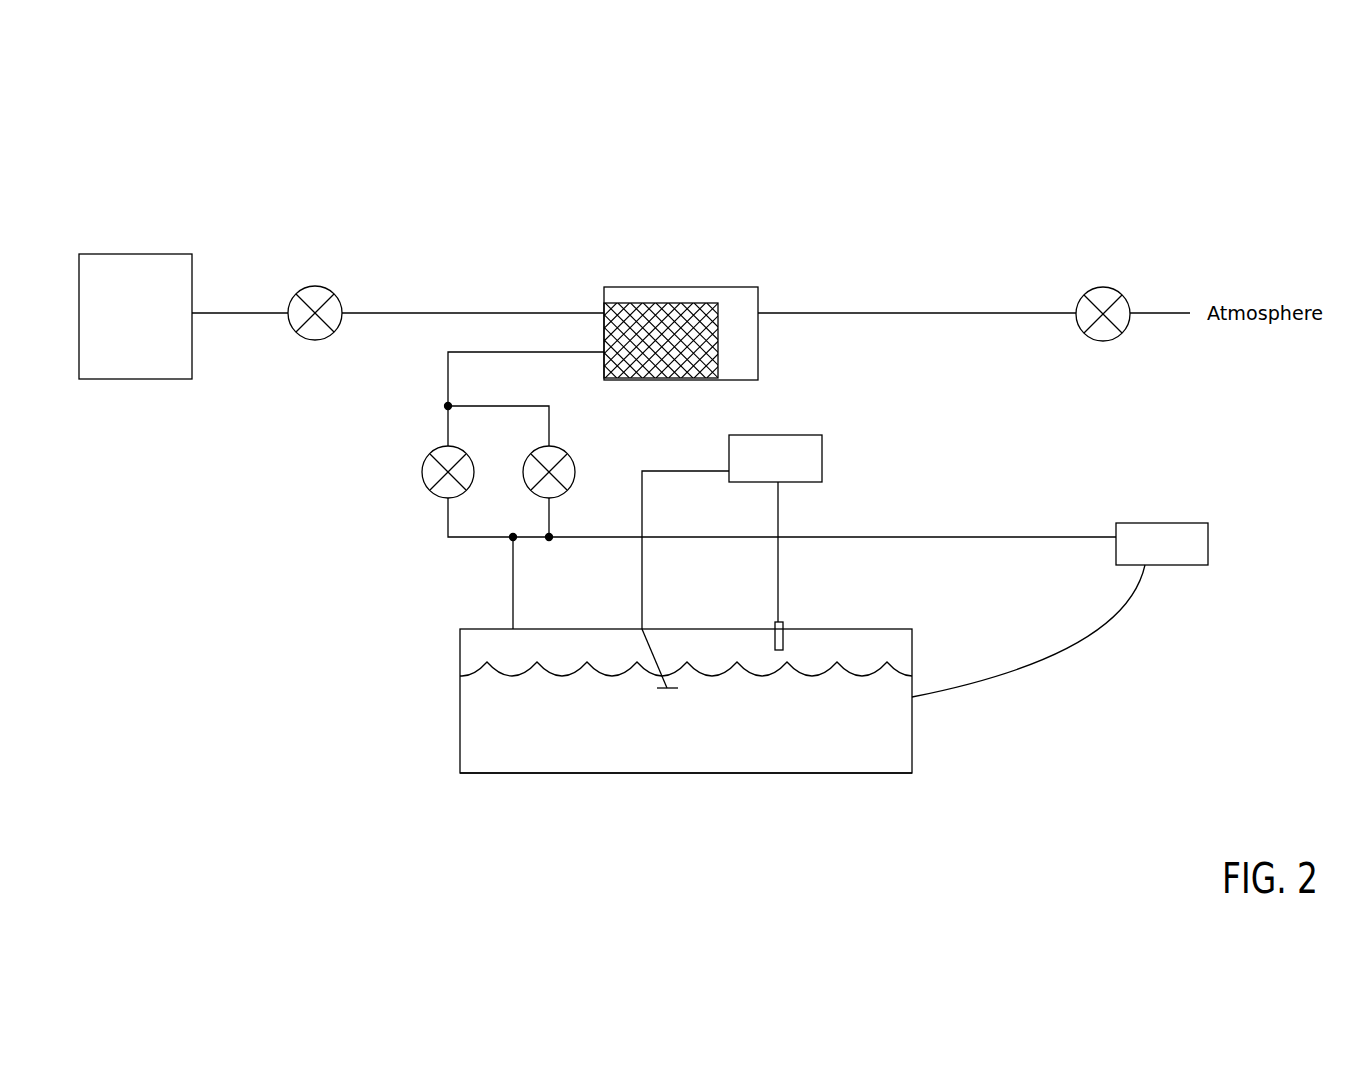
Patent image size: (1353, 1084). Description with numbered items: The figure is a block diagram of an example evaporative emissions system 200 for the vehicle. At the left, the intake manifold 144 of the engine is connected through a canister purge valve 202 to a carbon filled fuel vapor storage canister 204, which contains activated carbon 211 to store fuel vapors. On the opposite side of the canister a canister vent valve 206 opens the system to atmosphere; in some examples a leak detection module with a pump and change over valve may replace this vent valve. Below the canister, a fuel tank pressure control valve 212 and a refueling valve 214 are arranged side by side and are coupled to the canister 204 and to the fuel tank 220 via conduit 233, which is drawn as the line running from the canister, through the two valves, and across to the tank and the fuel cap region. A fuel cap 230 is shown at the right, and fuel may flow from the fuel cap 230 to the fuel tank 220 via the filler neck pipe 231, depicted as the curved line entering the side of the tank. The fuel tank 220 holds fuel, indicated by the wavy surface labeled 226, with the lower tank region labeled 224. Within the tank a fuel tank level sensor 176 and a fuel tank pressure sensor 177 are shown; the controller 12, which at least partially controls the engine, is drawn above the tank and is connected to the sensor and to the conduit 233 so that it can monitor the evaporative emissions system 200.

The evaporative emissions system 200 is at (162, 140).
The intake manifold 144 is at (152, 327).
The canister purge valve 202 is at (316, 287).
The carbon filled fuel vapor storage canister 204 is at (663, 287).
The activated carbon 211 is at (604, 312).
The canister vent valve 206 is at (1103, 287).
The conduit 233 is at (470, 353).
The fuel tank pressure control valve 212 is at (450, 444).
The refueling valve 214 is at (552, 444).
The controller 12 is at (763, 471).
The fuel cap 230 is at (1146, 554).
The filler neck pipe 231 is at (1077, 643).
The fuel tank 220 is at (912, 645).
The fuel tank wall 224 is at (895, 750).
The liquid fuel 226 is at (468, 653).
The fuel tank level sensor 176 is at (642, 629).
The fuel tank pressure sensor 177 is at (779, 650).